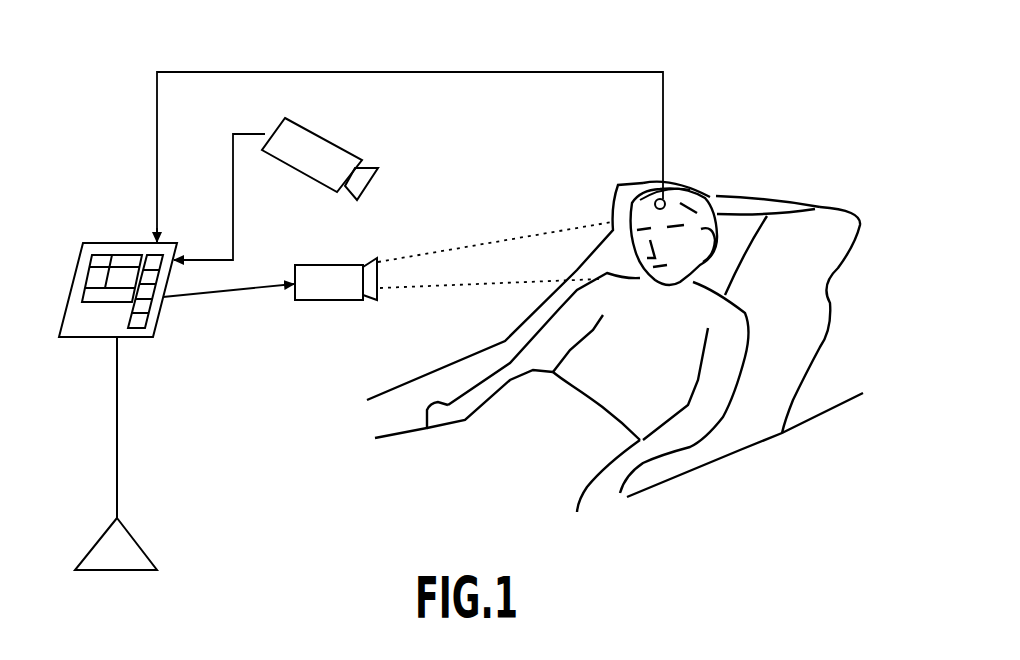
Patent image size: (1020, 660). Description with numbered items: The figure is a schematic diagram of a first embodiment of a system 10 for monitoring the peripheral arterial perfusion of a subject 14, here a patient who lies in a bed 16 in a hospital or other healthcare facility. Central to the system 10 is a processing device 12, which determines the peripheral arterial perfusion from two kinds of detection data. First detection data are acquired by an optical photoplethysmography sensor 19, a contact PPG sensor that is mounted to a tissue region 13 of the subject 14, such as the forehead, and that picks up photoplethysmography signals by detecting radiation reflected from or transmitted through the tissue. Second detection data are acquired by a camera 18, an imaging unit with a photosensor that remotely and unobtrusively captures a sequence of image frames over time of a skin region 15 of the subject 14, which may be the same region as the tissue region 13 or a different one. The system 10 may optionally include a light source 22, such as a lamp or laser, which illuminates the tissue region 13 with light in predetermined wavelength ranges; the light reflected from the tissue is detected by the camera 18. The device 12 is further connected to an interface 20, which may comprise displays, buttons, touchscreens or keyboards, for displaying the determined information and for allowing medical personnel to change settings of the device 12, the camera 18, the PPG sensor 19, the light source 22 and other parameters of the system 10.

The system 10 is at (116, 152).
The processing device 12 is at (98, 395).
The interface 20 is at (74, 277).
The camera 18 is at (350, 145).
The light source 22 is at (308, 265).
The skin region 15 is at (612, 228).
The tissue region 13 is at (678, 189).
The optical photoplethysmography sensor 19 is at (667, 180).
The subject 14 is at (767, 216).
The bed 16 is at (793, 360).